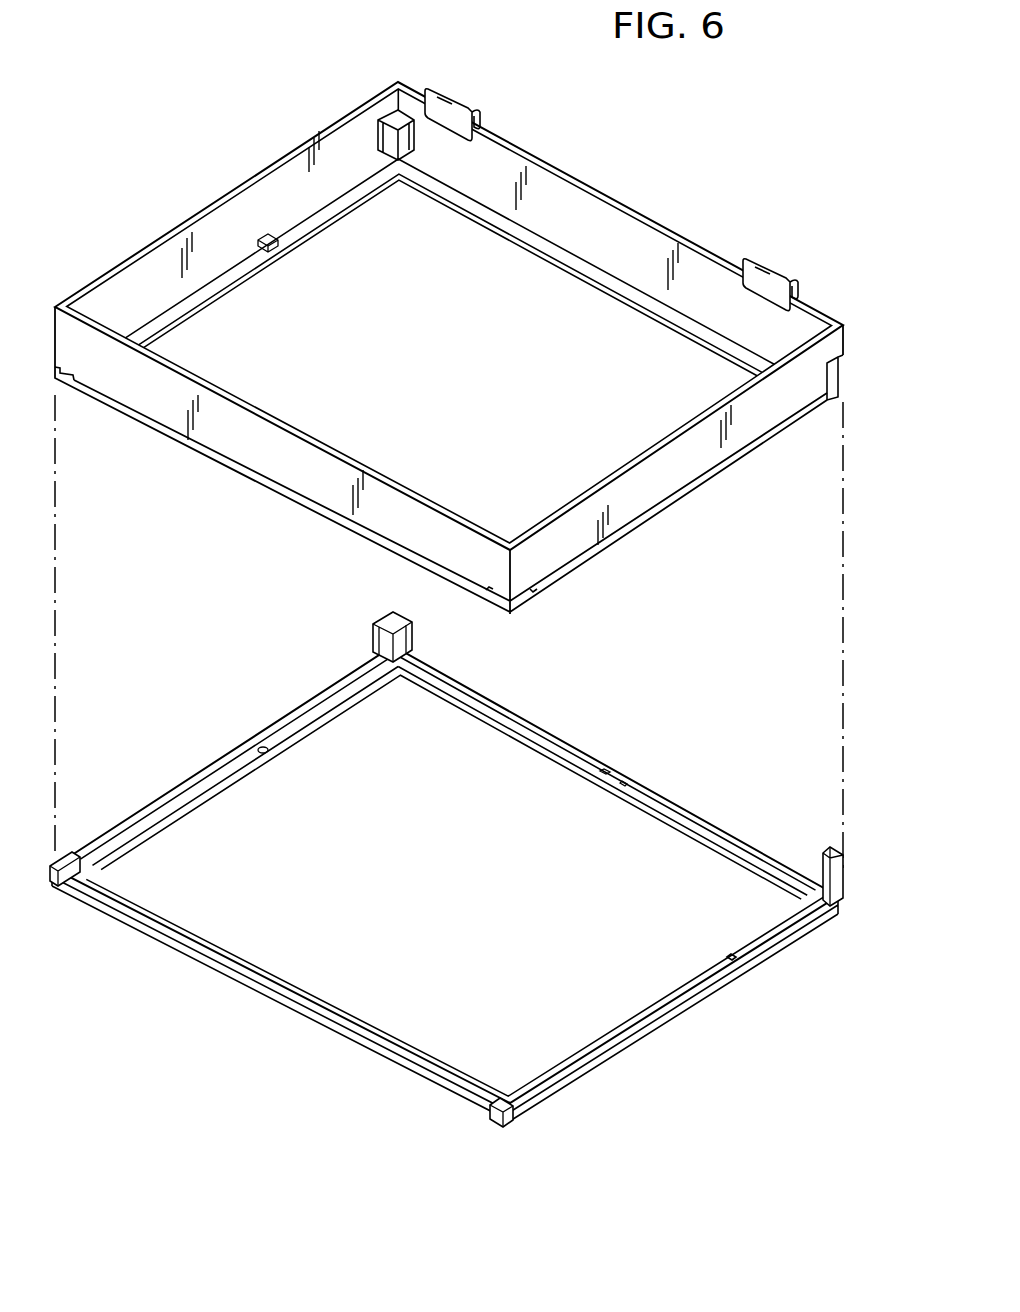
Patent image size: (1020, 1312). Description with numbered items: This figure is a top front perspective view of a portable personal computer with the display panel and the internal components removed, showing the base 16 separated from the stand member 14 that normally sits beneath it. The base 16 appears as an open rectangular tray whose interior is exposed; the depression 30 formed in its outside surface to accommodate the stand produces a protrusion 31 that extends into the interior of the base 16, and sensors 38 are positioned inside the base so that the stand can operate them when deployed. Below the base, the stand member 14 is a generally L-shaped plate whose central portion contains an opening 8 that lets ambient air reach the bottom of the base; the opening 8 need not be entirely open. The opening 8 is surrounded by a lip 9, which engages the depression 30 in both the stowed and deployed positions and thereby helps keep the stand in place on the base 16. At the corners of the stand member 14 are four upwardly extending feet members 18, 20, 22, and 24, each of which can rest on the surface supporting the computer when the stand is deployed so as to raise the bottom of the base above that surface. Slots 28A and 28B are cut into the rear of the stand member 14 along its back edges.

The opening 8 is at (432, 907).
The lip 9 is at (523, 738).
The stand member 14 is at (653, 1026).
The base 16 is at (655, 223).
The foot member 18 is at (62, 883).
The foot member 20 is at (500, 1122).
The foot member 22 is at (373, 636).
The foot member 24 is at (837, 906).
The slot 28A is at (563, 748).
The slot 28B is at (680, 813).
The depression 30 is at (841, 377).
The protrusion 31 is at (580, 266).
The sensors 38 is at (264, 235).